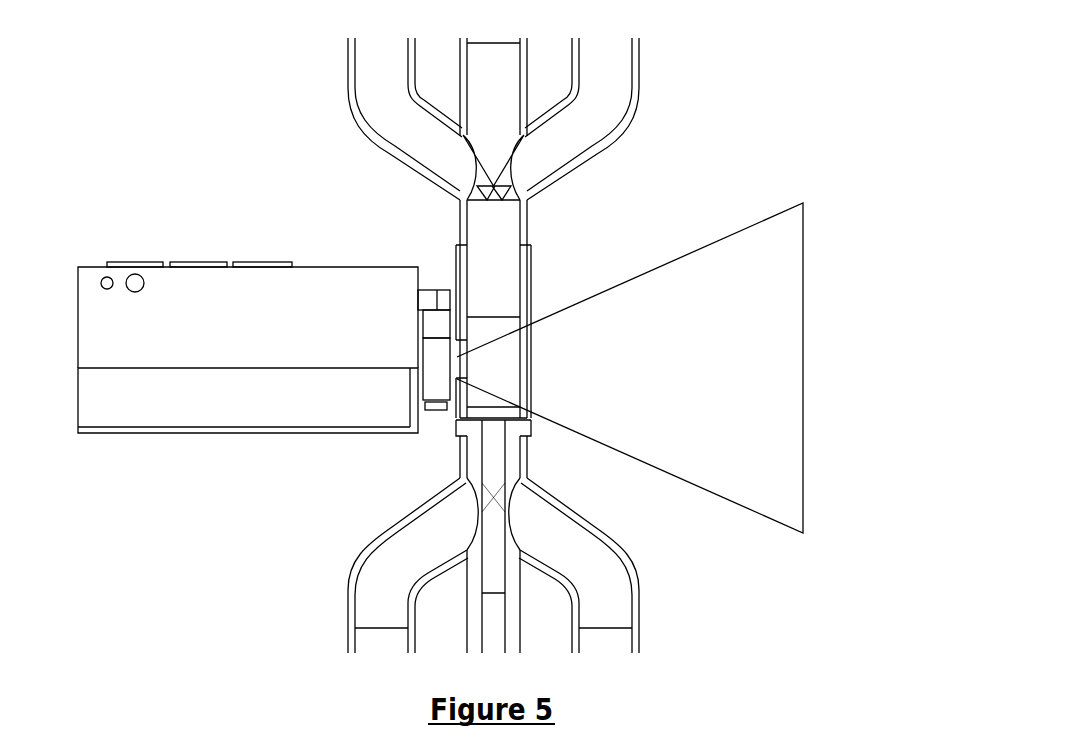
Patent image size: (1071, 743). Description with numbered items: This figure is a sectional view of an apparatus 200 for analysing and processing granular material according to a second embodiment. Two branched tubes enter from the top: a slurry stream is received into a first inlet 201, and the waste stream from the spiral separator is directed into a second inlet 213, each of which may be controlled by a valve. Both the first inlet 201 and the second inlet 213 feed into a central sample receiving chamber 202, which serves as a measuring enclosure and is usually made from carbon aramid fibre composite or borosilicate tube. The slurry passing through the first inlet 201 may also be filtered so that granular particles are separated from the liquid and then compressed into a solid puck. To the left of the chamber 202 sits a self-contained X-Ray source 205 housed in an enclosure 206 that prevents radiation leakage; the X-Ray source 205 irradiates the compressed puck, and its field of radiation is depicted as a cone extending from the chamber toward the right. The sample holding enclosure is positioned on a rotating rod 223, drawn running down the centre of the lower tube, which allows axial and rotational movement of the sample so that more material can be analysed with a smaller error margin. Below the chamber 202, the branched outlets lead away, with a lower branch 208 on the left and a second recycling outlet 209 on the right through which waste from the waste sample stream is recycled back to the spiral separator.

The apparatus 200 is at (239, 354).
The first inlet 201 is at (395, 118).
The sample receiving chamber 202 is at (458, 238).
The X-Ray source 205 is at (182, 287).
The enclosure 206 is at (185, 430).
The lower left outlet tube 208 is at (390, 563).
The second recycling outlet 209 is at (618, 617).
The second inlet 213 is at (607, 127).
The rotating rod 223 is at (505, 467).